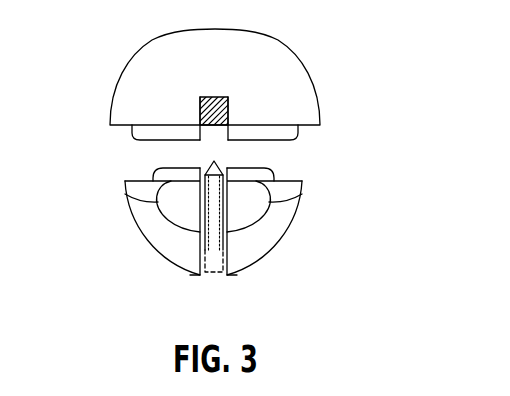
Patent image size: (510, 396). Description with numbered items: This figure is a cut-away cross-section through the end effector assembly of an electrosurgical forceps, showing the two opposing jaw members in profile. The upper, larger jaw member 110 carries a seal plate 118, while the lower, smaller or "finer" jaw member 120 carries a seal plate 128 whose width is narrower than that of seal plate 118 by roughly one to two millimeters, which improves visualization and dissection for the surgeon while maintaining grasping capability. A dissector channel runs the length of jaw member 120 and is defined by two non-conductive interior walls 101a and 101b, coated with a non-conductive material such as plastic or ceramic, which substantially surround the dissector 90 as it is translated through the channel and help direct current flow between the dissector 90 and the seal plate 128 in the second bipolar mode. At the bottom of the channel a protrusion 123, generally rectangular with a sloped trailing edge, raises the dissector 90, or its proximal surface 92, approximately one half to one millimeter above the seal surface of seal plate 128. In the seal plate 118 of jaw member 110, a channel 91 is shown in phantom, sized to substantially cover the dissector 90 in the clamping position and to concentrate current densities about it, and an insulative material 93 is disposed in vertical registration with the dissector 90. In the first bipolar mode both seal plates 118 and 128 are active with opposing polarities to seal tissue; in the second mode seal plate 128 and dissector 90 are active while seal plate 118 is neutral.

The jaw member 110 is at (293, 51).
The seal plate 118 is at (285, 141).
The channel 91 is at (213, 97).
The insulative material 93 is at (200, 113).
The dissector 90 is at (230, 158).
The proximal surface 92 is at (205, 170).
The protrusion 123 is at (215, 273).
The jaw member 120 is at (292, 238).
The seal plate 128 is at (153, 178).
The non-conductive interior wall 101a is at (200, 242).
The non-conductive interior wall 101b is at (227, 242).